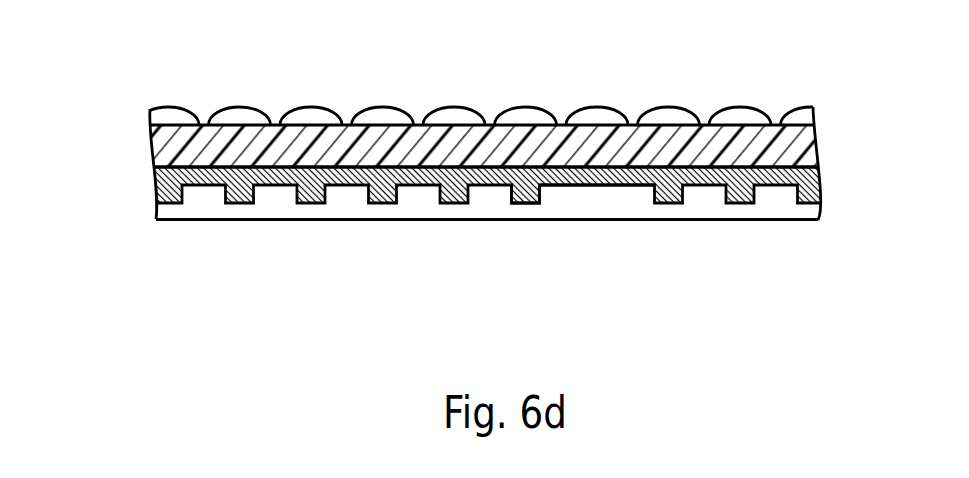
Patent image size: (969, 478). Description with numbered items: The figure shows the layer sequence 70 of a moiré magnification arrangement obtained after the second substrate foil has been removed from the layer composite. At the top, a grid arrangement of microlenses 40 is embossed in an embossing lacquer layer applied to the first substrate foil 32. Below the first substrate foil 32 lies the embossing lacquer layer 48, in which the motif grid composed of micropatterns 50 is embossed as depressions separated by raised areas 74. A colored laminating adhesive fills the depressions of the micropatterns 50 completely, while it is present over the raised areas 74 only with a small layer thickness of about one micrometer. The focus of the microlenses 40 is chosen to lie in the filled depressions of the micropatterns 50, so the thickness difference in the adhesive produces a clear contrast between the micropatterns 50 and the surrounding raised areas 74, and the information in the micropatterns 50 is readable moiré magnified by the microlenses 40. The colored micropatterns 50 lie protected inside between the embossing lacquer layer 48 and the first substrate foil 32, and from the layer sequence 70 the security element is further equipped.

The layer sequence 70 is at (118, 62).
The microlenses 40 is at (525, 117).
The first substrate foil 32 is at (800, 146).
The embossing lacquer layer 48 is at (810, 210).
The micropatterns 50 is at (524, 190).
The raised areas 74 is at (632, 192).